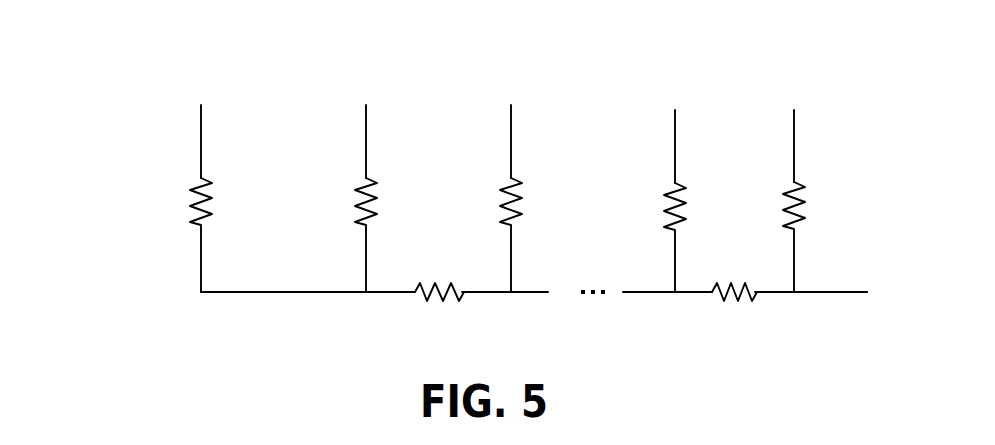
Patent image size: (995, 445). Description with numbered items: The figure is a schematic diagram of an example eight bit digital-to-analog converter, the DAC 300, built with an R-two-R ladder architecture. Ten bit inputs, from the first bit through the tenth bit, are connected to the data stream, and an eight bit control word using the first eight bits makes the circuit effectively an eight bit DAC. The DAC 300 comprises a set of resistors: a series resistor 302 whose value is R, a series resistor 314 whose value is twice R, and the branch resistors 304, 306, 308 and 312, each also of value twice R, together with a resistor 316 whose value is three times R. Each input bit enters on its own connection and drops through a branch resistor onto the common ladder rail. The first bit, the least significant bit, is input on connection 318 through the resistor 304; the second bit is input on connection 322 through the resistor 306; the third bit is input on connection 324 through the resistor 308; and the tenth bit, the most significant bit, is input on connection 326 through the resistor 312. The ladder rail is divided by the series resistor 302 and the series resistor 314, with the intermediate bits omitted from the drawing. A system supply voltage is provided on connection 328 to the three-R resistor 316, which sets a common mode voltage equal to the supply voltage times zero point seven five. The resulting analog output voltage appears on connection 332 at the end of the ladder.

The 8 bit DAC 300 is at (130, 38).
The resistor 302 is at (452, 283).
The resistor 304 is at (212, 198).
The resistor 306 is at (375, 198).
The resistor 308 is at (518, 198).
The resistor 312 is at (682, 202).
The resistor 314 is at (747, 287).
The resistor 316 is at (790, 213).
The connection 318 is at (201, 140).
The connection 322 is at (366, 145).
The connection 324 is at (511, 143).
The connection 326 is at (675, 143).
The connection 328 is at (794, 150).
The connection 332 is at (818, 292).